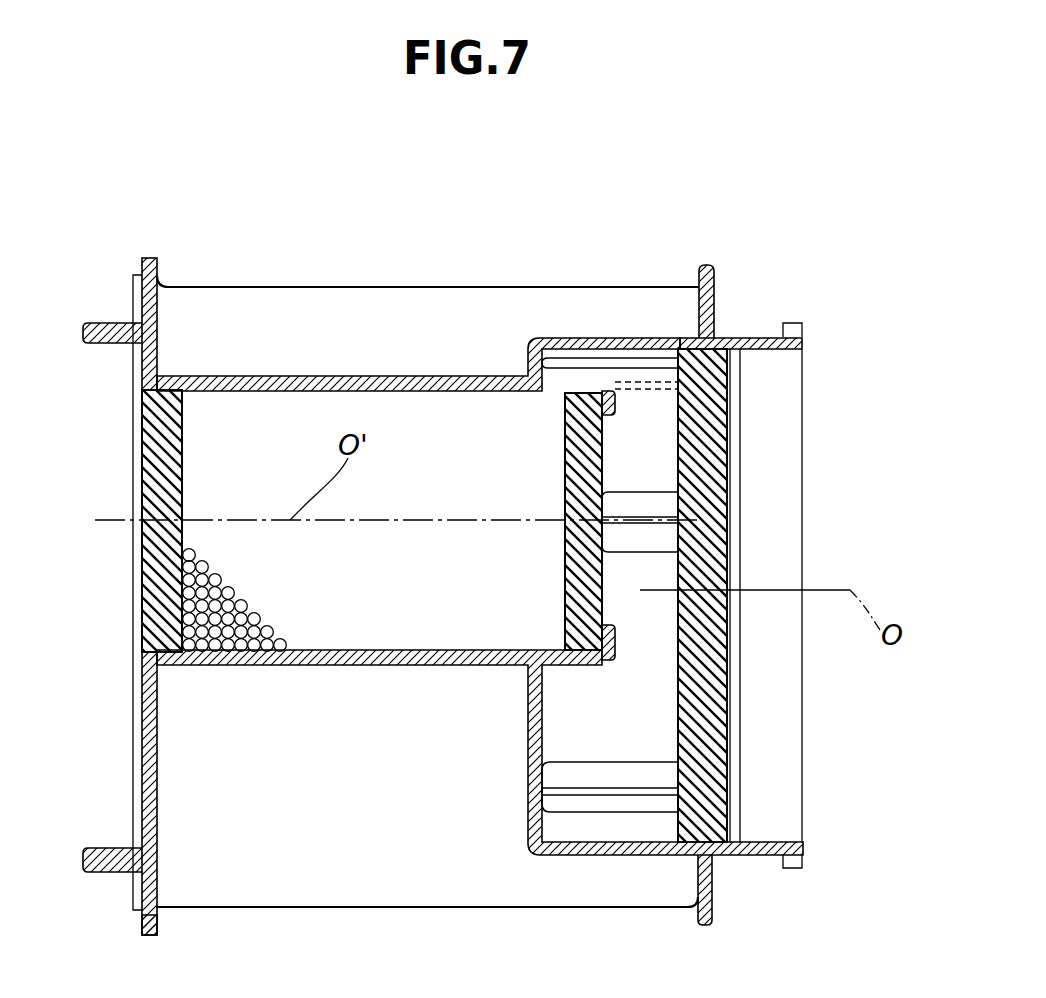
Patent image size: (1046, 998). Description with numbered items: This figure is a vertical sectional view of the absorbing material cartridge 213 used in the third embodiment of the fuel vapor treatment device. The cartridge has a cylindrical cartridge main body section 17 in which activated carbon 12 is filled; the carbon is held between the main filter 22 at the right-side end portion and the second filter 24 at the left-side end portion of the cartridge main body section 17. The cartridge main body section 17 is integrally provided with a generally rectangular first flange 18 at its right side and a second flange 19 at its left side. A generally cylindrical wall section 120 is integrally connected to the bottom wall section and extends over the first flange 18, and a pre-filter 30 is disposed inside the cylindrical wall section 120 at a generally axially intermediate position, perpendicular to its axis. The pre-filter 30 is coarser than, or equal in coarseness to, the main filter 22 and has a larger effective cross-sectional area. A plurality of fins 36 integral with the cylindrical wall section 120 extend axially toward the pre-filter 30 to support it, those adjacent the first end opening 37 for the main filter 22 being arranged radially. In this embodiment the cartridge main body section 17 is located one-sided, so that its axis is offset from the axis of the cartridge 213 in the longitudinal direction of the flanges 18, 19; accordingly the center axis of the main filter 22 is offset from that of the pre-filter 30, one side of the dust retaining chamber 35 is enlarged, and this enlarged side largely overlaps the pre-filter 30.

The absorbing material cartridge 213 is at (486, 287).
The cylindrical wall section 120 is at (748, 338).
The second filter 24 is at (152, 477).
The activated carbon 12 is at (243, 607).
The main filter 22 is at (565, 595).
The cartridge main body section 17 is at (362, 665).
The fins 36 is at (653, 572).
The first end opening 37 is at (615, 608).
The pre-filter 30 is at (707, 678).
The dust retaining chamber 35 is at (543, 740).
The second flange 19 is at (157, 922).
The first flange 18 is at (713, 890).